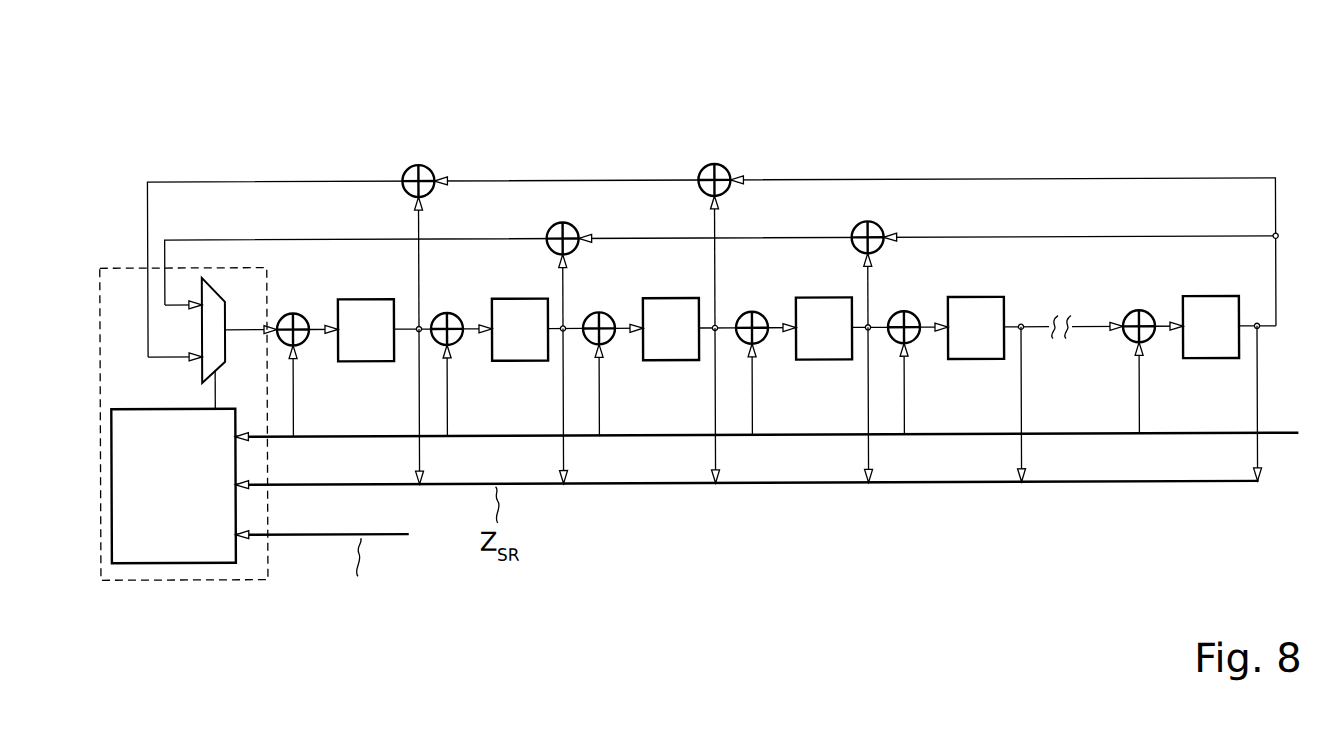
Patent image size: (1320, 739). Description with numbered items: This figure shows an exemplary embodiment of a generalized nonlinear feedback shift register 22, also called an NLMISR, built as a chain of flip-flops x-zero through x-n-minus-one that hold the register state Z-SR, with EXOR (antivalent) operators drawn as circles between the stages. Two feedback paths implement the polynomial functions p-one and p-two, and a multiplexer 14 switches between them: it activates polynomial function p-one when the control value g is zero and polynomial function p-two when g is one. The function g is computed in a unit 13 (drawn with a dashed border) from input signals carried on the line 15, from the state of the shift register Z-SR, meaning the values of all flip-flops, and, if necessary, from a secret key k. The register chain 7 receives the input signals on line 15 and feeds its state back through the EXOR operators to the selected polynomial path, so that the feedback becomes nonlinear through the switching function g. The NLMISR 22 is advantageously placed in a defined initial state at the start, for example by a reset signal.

The nonlinear feedback shift register 22 is at (187, 124).
The linear feedback shift register 7 is at (1104, 168).
The multiplexer 14 is at (212, 284).
The control unit 13 is at (187, 582).
The signal line 15 is at (1288, 436).